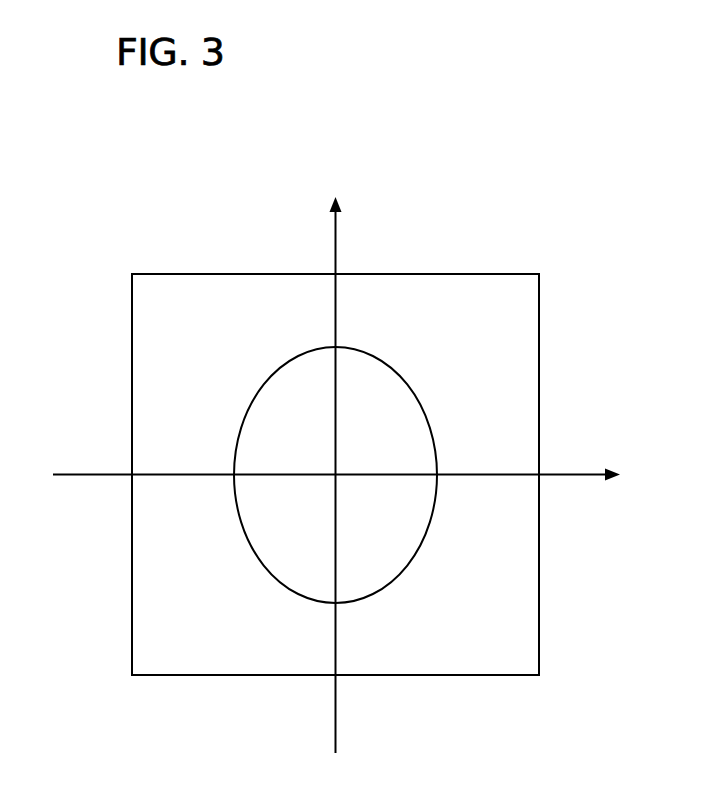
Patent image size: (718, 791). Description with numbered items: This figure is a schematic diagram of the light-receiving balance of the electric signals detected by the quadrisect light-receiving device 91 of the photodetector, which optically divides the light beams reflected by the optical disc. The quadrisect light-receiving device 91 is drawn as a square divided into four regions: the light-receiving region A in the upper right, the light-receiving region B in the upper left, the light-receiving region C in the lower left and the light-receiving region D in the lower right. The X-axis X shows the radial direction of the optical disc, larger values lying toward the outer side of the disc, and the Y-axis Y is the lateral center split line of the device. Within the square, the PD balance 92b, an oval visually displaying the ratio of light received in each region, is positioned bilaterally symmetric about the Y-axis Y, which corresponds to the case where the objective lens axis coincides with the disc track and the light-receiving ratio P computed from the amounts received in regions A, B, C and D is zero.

The quadrisect light-receiving device 91 is at (210, 274).
The PD balance 92b is at (287, 362).
The light-receiving region A is at (438, 374).
The light-receiving region B is at (234, 374).
The light-receiving region C is at (234, 575).
The light-receiving region D is at (438, 575).
The X-axis X is at (348, 474).
The Y-axis Y is at (334, 459).